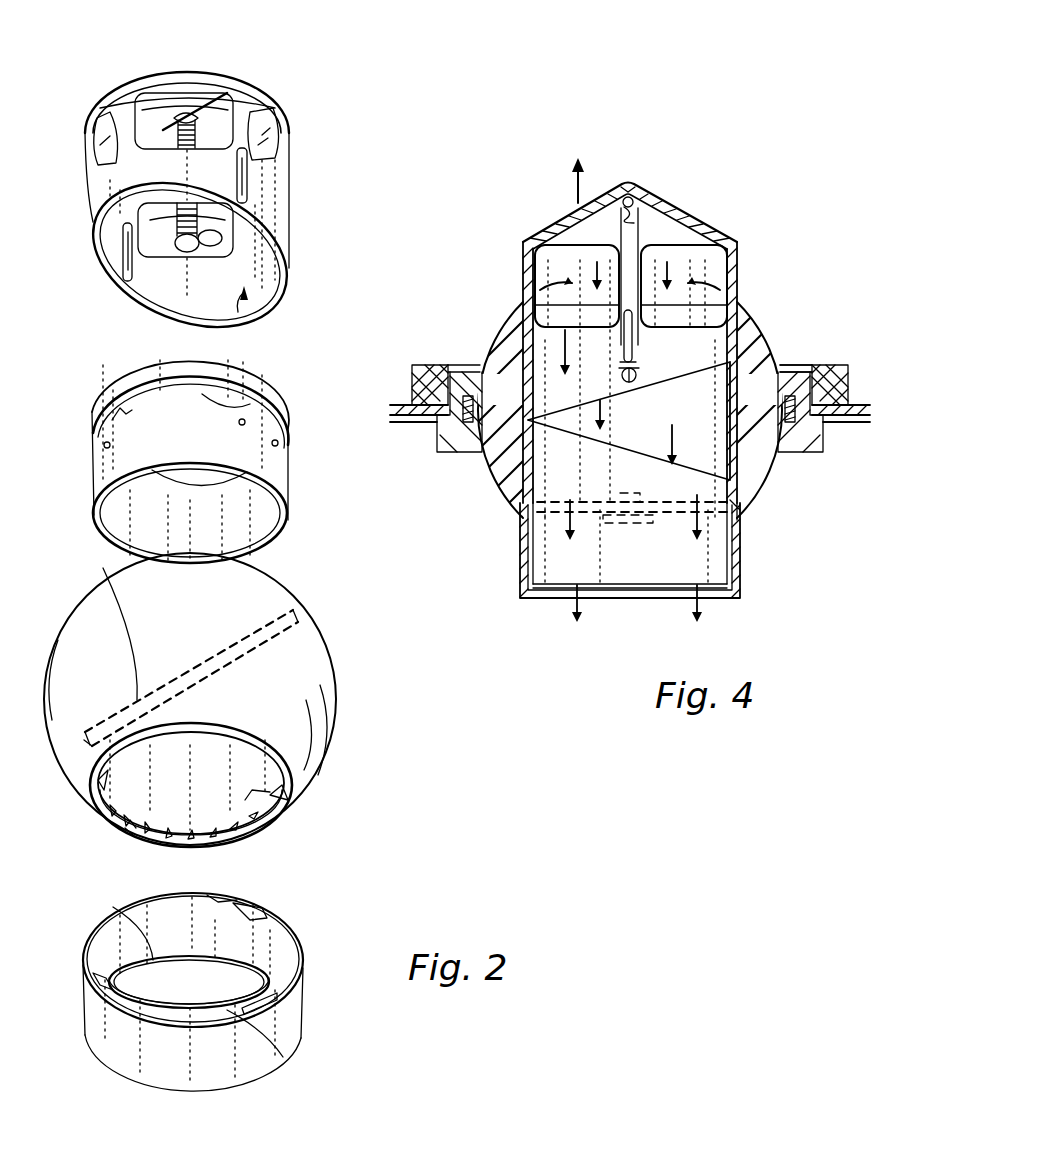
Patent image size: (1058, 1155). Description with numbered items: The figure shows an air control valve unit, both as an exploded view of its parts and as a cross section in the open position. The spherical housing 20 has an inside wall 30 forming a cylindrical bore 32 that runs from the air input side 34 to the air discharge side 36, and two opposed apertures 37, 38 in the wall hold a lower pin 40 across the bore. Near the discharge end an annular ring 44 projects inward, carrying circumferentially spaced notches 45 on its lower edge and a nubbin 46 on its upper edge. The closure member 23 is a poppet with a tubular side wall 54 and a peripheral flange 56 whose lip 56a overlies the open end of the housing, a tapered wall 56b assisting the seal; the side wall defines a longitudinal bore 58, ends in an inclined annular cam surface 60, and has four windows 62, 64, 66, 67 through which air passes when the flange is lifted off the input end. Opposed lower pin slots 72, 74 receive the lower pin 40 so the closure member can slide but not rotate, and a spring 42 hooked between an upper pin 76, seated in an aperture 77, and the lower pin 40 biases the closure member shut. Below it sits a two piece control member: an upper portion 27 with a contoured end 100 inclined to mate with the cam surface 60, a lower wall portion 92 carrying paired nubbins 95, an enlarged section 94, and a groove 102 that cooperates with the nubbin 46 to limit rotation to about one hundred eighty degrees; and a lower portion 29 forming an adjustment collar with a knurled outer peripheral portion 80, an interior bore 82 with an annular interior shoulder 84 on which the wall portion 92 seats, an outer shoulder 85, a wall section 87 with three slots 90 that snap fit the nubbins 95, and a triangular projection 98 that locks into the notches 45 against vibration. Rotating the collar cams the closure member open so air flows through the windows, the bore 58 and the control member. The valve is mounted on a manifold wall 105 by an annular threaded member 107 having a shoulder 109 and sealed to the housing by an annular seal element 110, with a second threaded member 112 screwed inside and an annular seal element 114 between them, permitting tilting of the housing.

In FIG. 2, the housing 20 is at (346, 676).
In FIG. 4, the housing 20 is at (748, 345).
In FIG. 2, the closure member 23 is at (262, 79).
In FIG. 4, the closure member 23 is at (692, 212).
In FIG. 2, the upper portion of the control member 27 is at (270, 389).
In FIG. 2, the lower portion of the control member 29 is at (300, 944).
In FIG. 2, the inside wall 30 is at (290, 790).
In FIG. 2, the cylindrical bore 32 is at (120, 775).
In FIG. 2, the air input side 34 is at (266, 576).
In FIG. 2, the air discharge side 36 is at (270, 745).
In FIG. 2, the aperture 37 is at (90, 740).
In FIG. 2, the aperture 38 is at (298, 612).
In FIG. 2, the lower pin 40 is at (108, 590).
In FIG. 4, the lower pin 40 is at (618, 376).
In FIG. 2, the spring 42 is at (245, 204).
In FIG. 4, the spring 42 is at (632, 247).
In FIG. 2, the annular ring 44 is at (138, 830).
In FIG. 2, the notches 45 is at (118, 822).
In FIG. 2, the nubbin 46 is at (286, 802).
In FIG. 2, the tubular side wall 54 is at (272, 192).
In FIG. 2, the peripheral flange 56 is at (98, 94).
In FIG. 4, the peripheral flange 56 is at (740, 240).
In FIG. 4, the lip 56a is at (524, 240).
In FIG. 4, the tapered wall 56b is at (528, 264).
In FIG. 2, the longitudinal bore 58 is at (262, 312).
In FIG. 2, the annular cam surface 60 is at (135, 300).
In FIG. 4, the annular cam surface 60 is at (664, 388).
In FIG. 2, the window 62 is at (90, 172).
In FIG. 2, the window 64 is at (148, 104).
In FIG. 2, the window 66 is at (268, 140).
In FIG. 2, the window 67 is at (218, 240).
In FIG. 2, the lower pin slot 72 is at (125, 268).
In FIG. 2, the lower pin slot 74 is at (236, 196).
In FIG. 2, the upper pin 76 is at (193, 98).
In FIG. 4, the upper pin 76 is at (632, 188).
In FIG. 4, the aperture 77 is at (618, 182).
In FIG. 4, the knurled outer peripheral portion 80 is at (742, 576).
In FIG. 2, the interior bore 82 is at (268, 978).
In FIG. 2, the annular interior shoulder 84 is at (113, 907).
In FIG. 4, the annular interior shoulder 84 is at (524, 600).
In FIG. 2, the outer shoulder 85 is at (92, 980).
In FIG. 4, the outer shoulder 85 is at (522, 520).
In FIG. 2, the wall section 87 is at (292, 1050).
In FIG. 2, the slots 90 is at (250, 922).
In FIG. 4, the slots 90 is at (648, 526).
In FIG. 2, the lower wall portion 92 is at (272, 492).
In FIG. 4, the lower wall portion 92 is at (536, 553).
In FIG. 2, the section of greater outside diameter 94 is at (100, 408).
In FIG. 2, the nubbins 95 is at (102, 443).
In FIG. 2, the projection 98 is at (218, 893).
In FIG. 2, the contoured end 100 is at (234, 380).
In FIG. 2, the groove 102 is at (246, 406).
In FIG. 4, the groove 102 is at (737, 515).
In FIG. 4, the wall 105 is at (410, 428).
In FIG. 4, the annular threaded member 107 is at (470, 366).
In FIG. 4, the shoulder 109 is at (470, 454).
In FIG. 4, the annular seal element 110 is at (800, 378).
In FIG. 4, the second threaded member 112 is at (428, 366).
In FIG. 4, the annular seal element 114 is at (838, 378).